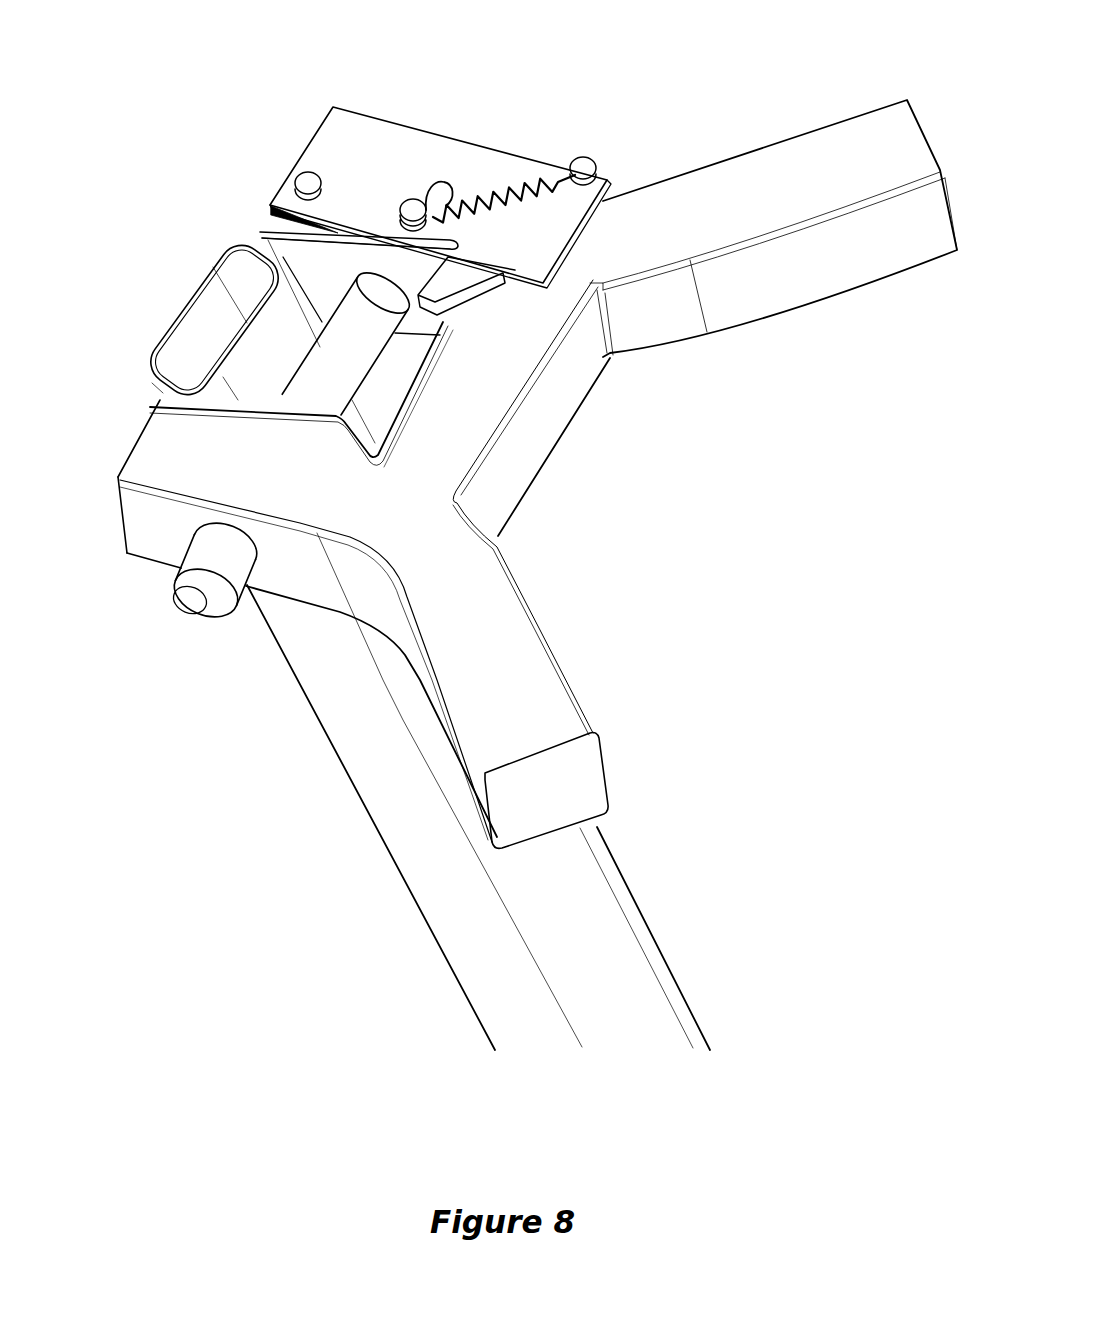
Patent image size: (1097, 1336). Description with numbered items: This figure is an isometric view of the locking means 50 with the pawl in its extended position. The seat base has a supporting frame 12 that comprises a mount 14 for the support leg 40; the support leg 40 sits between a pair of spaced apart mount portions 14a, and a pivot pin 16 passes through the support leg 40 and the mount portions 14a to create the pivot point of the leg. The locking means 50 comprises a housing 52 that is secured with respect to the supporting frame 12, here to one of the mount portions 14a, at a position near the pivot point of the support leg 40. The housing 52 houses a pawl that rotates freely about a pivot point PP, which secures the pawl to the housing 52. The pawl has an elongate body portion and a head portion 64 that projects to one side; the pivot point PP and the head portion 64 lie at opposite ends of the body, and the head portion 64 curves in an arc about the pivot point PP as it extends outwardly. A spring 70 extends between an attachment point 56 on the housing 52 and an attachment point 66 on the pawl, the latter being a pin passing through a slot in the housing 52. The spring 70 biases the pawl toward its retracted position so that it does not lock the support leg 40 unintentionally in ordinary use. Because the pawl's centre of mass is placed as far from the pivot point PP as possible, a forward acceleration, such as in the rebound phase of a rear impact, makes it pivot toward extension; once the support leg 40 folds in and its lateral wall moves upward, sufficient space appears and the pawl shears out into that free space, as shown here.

The supporting frame 12 is at (790, 157).
The mount 14 is at (376, 643).
The mount portion 14a is at (158, 447).
The pivot pin 16 is at (190, 602).
The support leg 40 is at (468, 933).
The locking means 50 is at (455, 237).
The housing 52 is at (348, 123).
The attachment point 56 is at (587, 160).
The head portion 64 is at (472, 295).
The attachment point 66 is at (443, 193).
The spring 70 is at (523, 177).
The pivot point PP is at (303, 180).